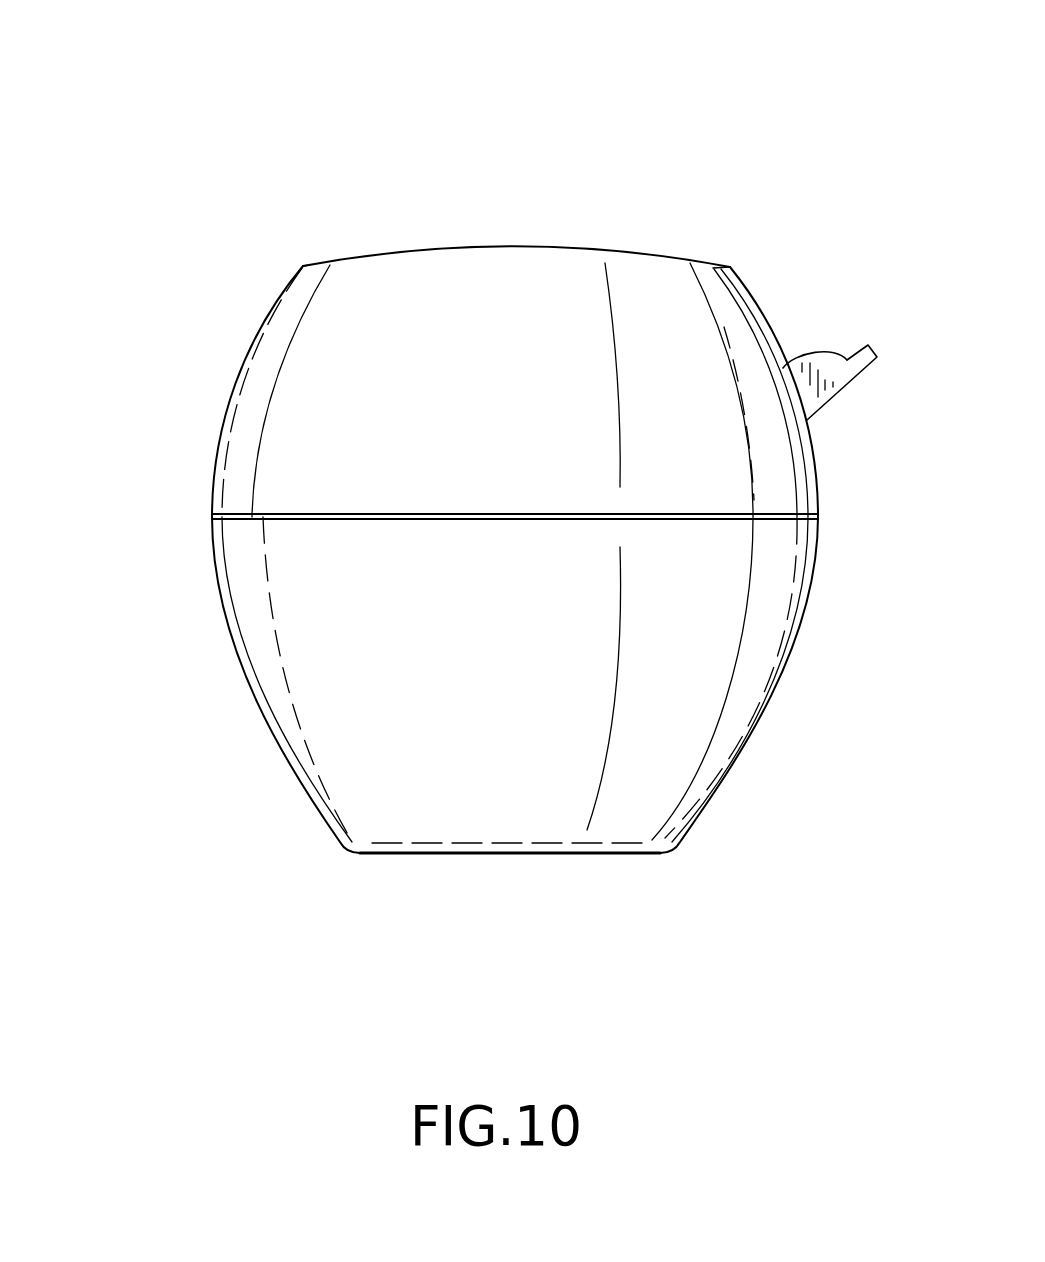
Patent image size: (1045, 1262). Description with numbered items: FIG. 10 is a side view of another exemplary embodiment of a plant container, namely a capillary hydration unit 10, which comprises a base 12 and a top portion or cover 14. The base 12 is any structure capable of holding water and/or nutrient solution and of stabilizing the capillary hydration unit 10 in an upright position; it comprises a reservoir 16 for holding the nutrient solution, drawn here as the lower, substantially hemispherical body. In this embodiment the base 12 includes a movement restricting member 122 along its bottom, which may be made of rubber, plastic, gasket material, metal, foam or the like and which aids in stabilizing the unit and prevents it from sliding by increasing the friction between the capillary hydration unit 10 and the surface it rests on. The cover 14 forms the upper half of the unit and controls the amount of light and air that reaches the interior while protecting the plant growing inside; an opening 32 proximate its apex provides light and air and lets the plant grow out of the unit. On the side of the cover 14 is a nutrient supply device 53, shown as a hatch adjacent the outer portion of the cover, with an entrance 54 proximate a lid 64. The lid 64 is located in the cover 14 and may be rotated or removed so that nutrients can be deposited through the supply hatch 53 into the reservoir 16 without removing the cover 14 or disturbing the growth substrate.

The capillary hydration unit 10 is at (196, 161).
The base 12 is at (199, 645).
The cover 14 is at (175, 400).
The reservoir 16 is at (813, 663).
The opening 32 is at (486, 214).
The nutrient supply device 53 is at (790, 337).
The entrance 54 is at (777, 325).
The lid 64 is at (842, 390).
The movement restricting member 122 is at (480, 853).